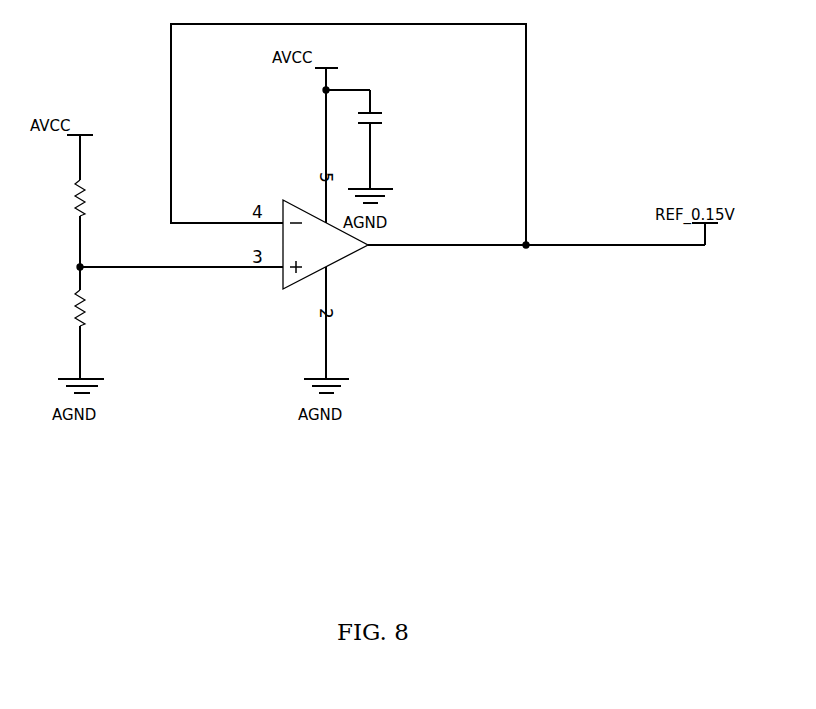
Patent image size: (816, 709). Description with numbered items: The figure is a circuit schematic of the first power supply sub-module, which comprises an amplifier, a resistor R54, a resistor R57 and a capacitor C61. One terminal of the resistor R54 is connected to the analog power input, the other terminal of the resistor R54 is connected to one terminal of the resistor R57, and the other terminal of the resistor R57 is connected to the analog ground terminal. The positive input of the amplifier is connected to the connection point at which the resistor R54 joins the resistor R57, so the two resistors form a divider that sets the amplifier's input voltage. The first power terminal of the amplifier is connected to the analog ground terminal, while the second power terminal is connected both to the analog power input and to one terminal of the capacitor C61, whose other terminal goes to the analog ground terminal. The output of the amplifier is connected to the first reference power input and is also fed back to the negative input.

The resistor R54 is at (96, 198).
The resistor R57 is at (96, 308).
The capacitor C61 is at (389, 139).